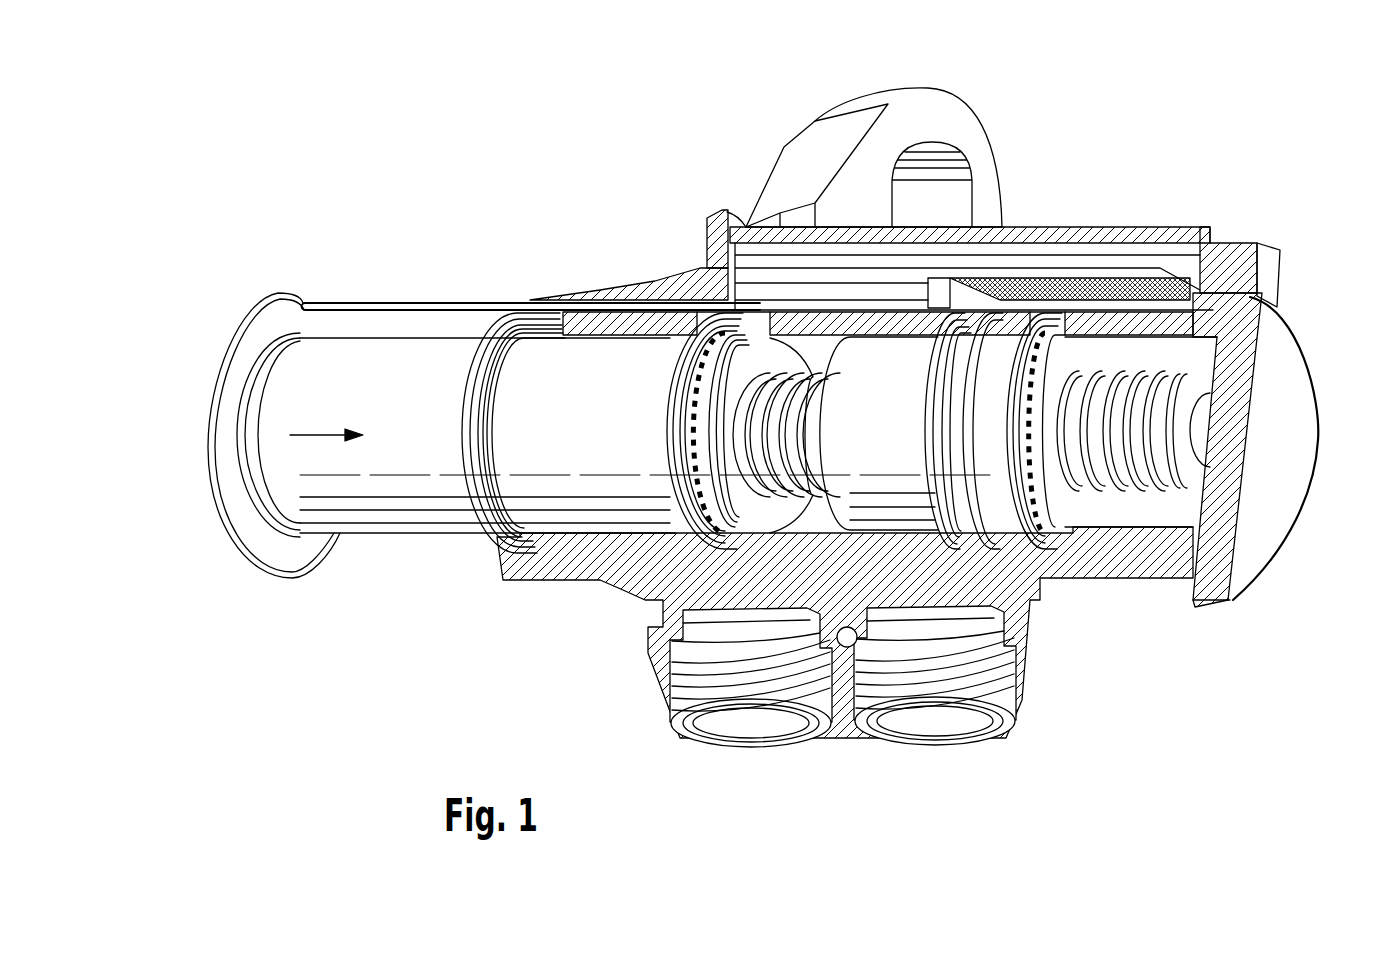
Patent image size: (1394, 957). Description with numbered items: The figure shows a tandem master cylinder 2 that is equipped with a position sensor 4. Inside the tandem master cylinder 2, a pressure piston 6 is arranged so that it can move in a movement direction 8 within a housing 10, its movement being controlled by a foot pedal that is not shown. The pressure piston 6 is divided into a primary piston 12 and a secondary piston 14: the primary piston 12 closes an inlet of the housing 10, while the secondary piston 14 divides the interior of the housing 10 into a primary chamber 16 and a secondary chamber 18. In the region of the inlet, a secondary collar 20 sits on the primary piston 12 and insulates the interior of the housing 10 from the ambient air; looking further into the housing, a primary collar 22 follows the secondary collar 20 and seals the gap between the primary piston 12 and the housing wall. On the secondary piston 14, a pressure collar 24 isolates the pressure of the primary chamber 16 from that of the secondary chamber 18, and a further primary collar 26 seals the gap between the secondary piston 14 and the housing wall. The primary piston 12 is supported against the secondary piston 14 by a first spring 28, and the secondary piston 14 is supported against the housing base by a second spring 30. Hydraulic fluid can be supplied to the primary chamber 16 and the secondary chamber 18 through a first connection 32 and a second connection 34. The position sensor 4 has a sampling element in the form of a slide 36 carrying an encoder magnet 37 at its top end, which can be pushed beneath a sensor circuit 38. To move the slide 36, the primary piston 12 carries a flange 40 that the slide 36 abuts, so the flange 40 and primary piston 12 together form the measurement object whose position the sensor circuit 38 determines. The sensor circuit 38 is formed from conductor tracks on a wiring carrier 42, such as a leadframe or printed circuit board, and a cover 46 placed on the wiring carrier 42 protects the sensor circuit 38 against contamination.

The tandem master cylinder 2 is at (385, 190).
The position sensor 4 is at (1140, 195).
The pressure piston 6 is at (368, 548).
The movement direction 8 is at (305, 433).
The housing 10 is at (567, 557).
The primary piston 12 is at (400, 485).
The secondary piston 14 is at (882, 490).
The primary chamber 16 is at (822, 500).
The secondary chamber 18 is at (1133, 512).
The secondary collar 20 is at (487, 500).
The primary collar 22 is at (683, 500).
The pressure collar 24 is at (958, 500).
The further primary collar 26 is at (1040, 505).
The first spring 28 is at (758, 492).
The second spring 30 is at (1177, 485).
The first connection 32 is at (747, 720).
The second connection 34 is at (938, 720).
The slide 36 is at (580, 302).
The encoder magnet 37 is at (937, 293).
The sensor circuit 38 is at (1160, 300).
The flange 40 is at (290, 300).
The wiring carrier 42 is at (1097, 264).
The cover 46 is at (1227, 262).